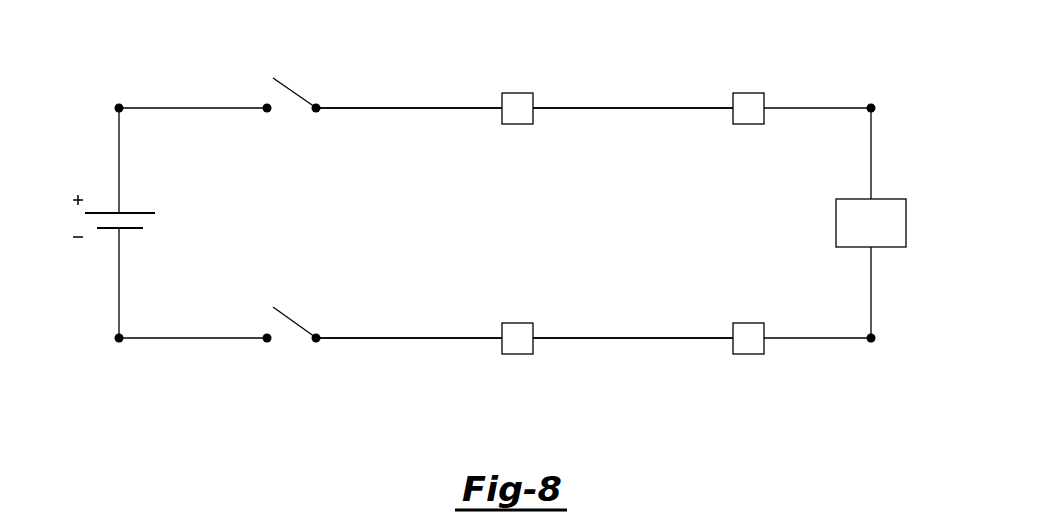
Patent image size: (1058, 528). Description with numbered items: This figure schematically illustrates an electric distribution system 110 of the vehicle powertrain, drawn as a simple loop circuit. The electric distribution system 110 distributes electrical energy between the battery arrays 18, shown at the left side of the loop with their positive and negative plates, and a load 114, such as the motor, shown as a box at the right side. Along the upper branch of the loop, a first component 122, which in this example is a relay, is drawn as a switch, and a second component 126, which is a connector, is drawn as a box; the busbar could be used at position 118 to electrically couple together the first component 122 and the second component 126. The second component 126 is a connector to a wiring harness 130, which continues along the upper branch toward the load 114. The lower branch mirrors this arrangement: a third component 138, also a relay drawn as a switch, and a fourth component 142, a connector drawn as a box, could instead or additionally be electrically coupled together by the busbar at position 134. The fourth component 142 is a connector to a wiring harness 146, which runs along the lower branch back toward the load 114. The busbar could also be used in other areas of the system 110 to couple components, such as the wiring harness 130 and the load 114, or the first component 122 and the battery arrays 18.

The electric distribution system 110 is at (817, 58).
The battery arrays 18 is at (107, 193).
The load 114 is at (882, 187).
The position 118 is at (397, 93).
The first component 122 is at (307, 83).
The second component 126 is at (516, 93).
The wiring harness 130 is at (633, 108).
The position 134 is at (397, 350).
The third component 138 is at (293, 345).
The fourth component 142 is at (517, 353).
The wiring harness 146 is at (633, 339).